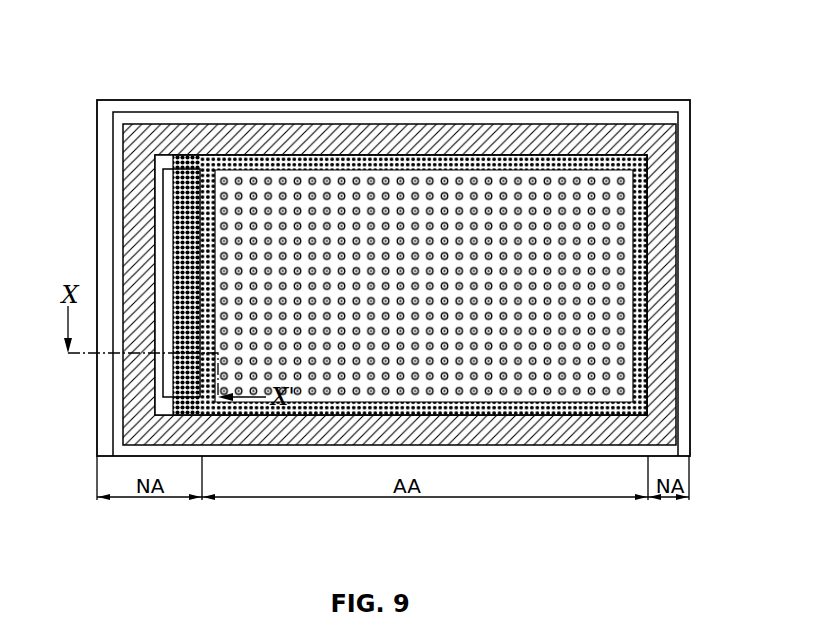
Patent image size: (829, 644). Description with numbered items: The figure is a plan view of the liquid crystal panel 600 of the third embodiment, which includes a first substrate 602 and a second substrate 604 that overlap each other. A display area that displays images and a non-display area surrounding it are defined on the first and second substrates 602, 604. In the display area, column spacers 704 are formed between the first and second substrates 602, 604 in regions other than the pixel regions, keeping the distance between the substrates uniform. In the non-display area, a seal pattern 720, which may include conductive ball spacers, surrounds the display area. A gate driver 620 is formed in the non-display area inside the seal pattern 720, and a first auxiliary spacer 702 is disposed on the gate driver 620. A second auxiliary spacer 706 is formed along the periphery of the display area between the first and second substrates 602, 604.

The liquid crystal panel 600 is at (608, 37).
The first substrate 602 is at (562, 105).
The second substrate 604 is at (590, 118).
The gate driver 620 is at (162, 208).
The first auxiliary spacer 702 is at (172, 185).
The column spacers 704 is at (443, 392).
The second auxiliary spacer 706 is at (488, 415).
The seal pattern 720 is at (563, 440).